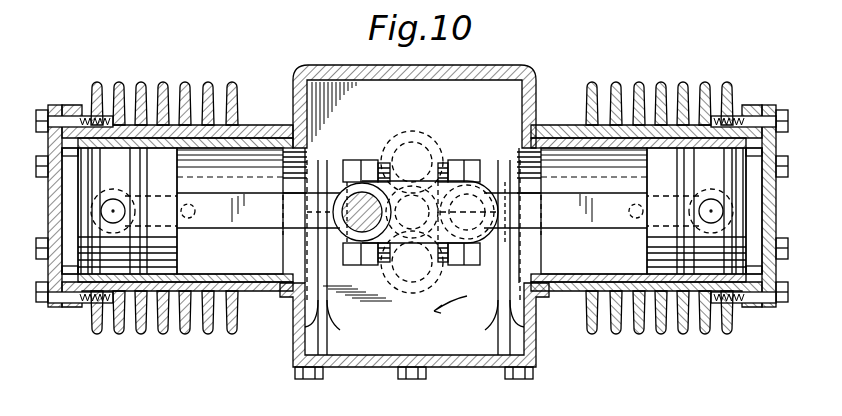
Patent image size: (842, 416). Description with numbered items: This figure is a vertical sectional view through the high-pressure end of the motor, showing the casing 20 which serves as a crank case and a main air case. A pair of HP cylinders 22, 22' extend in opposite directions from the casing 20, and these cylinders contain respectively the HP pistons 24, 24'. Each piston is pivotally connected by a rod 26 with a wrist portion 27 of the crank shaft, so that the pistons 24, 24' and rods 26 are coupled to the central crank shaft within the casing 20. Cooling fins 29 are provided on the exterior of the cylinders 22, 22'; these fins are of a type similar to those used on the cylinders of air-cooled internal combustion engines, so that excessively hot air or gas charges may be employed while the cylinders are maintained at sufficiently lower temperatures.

The casing 20 is at (506, 68).
The HP cylinder 22 is at (171, 184).
The HP cylinder 22' is at (652, 185).
The HP piston 24 is at (151, 211).
The HP piston 24' is at (676, 211).
The rod 26 is at (273, 222).
The wrist portion of the crank shaft 27 is at (343, 190).
The cooling fins 29 is at (183, 96).